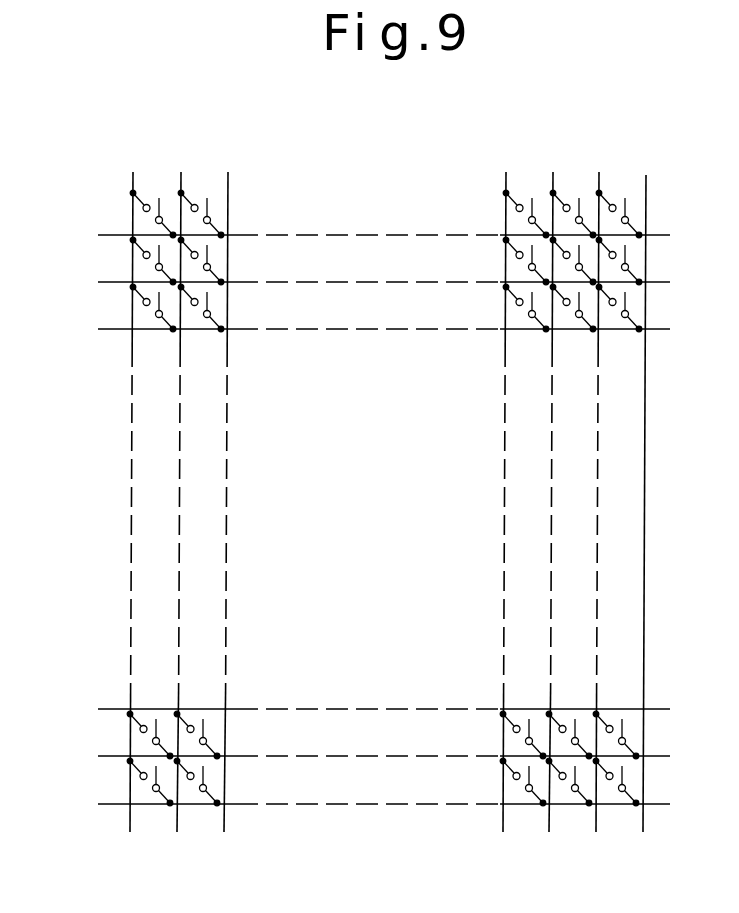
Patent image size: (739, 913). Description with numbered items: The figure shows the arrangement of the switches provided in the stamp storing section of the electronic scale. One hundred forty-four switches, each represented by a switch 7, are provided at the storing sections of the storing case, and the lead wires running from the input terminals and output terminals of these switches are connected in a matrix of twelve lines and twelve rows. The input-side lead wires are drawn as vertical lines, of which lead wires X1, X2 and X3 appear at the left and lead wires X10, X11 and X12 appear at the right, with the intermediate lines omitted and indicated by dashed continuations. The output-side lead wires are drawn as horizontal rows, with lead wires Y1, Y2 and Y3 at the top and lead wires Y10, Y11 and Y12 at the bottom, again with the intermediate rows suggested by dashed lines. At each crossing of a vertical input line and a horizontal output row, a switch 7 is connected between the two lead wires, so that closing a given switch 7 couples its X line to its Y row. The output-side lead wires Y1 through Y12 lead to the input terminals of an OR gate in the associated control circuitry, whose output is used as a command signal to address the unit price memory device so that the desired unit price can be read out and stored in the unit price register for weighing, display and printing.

The switch 7 is at (154, 795).
The lead wire X1 is at (135, 484).
The lead wire X2 is at (183, 484).
The lead wire X3 is at (230, 484).
The lead wire X10 is at (512, 484).
The lead wire X11 is at (558, 484).
The lead wire X12 is at (608, 484).
The lead wire Y1 is at (362, 237).
The lead wire Y2 is at (362, 284).
The lead wire Y3 is at (362, 331).
The lead wire Y10 is at (358, 711).
The lead wire Y11 is at (358, 758).
The lead wire Y12 is at (358, 806).